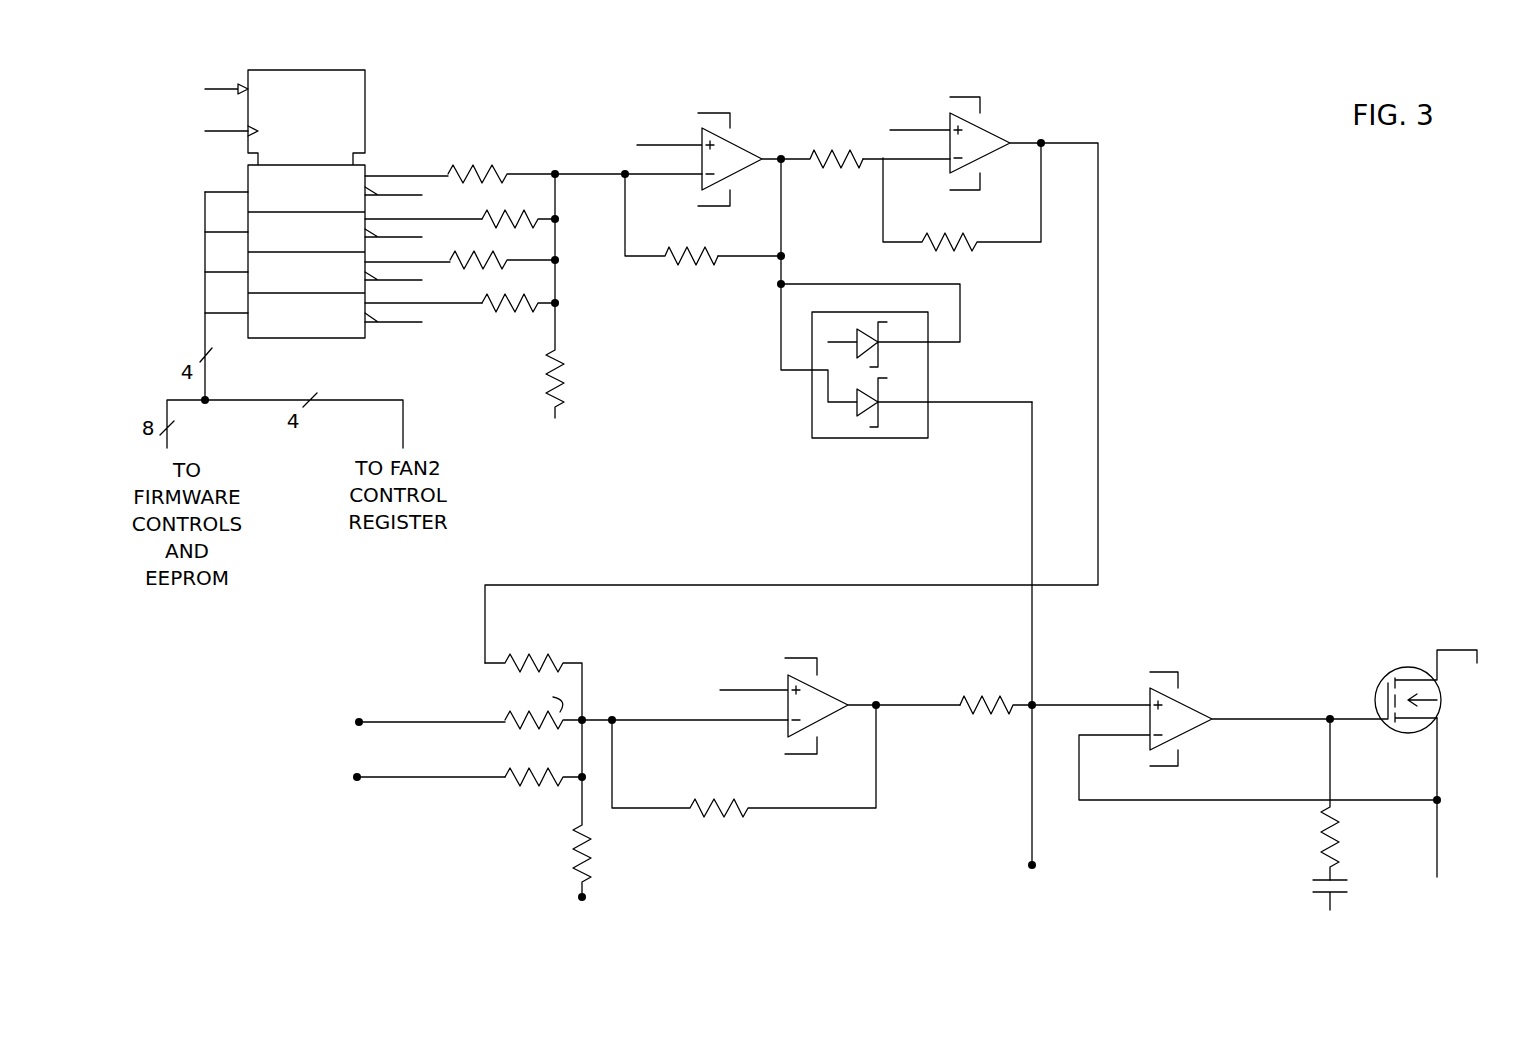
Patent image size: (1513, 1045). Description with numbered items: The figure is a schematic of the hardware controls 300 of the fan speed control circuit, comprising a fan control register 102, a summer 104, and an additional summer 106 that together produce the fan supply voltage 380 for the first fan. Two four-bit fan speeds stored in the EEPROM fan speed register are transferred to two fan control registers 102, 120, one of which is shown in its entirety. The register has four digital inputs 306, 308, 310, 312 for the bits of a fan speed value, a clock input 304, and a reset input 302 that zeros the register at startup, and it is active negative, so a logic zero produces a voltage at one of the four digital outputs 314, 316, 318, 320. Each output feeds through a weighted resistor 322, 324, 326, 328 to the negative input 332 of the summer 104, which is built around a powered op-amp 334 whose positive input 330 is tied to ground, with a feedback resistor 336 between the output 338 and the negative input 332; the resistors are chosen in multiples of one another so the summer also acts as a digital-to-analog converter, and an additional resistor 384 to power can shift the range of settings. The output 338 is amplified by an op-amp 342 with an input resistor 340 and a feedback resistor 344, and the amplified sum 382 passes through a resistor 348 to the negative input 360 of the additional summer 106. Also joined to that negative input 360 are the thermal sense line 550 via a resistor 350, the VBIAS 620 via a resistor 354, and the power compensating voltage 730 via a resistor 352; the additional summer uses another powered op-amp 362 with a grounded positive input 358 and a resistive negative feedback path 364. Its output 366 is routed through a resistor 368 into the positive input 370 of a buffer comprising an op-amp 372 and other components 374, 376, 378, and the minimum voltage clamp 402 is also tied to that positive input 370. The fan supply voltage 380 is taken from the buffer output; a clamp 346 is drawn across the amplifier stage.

The fan control register 102 is at (305, 355).
The summer 104 is at (679, 289).
The additional summer 106 is at (849, 821).
The fan control register 120 is at (403, 428).
The hardware controls 300 is at (1204, 330).
The reset input 302 is at (230, 90).
The clock input 304 is at (230, 131).
The digital input 306 is at (228, 194).
The digital input 308 is at (228, 234).
The digital input 310 is at (228, 274).
The digital input 312 is at (228, 315).
The digital output 314 is at (392, 176).
The digital output 316 is at (408, 220).
The digital output 318 is at (404, 262).
The digital output 320 is at (407, 303).
The resistor 322 is at (485, 160).
The resistor 324 is at (522, 237).
The resistor 326 is at (477, 275).
The resistor 328 is at (507, 322).
The positive input 330 is at (693, 132).
The negative input 332 is at (678, 187).
The op-amp 334 is at (743, 142).
The resistor 336 is at (688, 272).
The output 338 is at (787, 163).
The input resistor 340 is at (833, 173).
The op-amp 342 is at (988, 130).
The feedback resistor 344 is at (947, 257).
The zener diode clamp 346 is at (818, 438).
The resistor 348 is at (527, 652).
The resistor 350 is at (528, 737).
The resistor 352 is at (530, 790).
The resistor 354 is at (595, 862).
The positive input 358 is at (780, 683).
The negative input 360 is at (773, 724).
The op-amp 362 is at (838, 699).
The resistive negative feedback path 364 is at (713, 833).
The output 366 is at (892, 707).
The resistor 368 is at (995, 692).
The positive input 370 is at (1053, 705).
The op-amp 372 is at (1193, 705).
The component 374 is at (1318, 830).
The component 376 is at (1310, 883).
The component 378 is at (1405, 665).
The fan supply voltage 380 is at (1437, 760).
The amplified sum 382 is at (1100, 207).
The pull-up resistor 384 is at (575, 378).
The minimum voltage clamp 402 is at (1037, 848).
The thermal sense line 550 is at (388, 718).
The VBIAS 620 is at (578, 890).
The power compensating voltage 730 is at (388, 778).